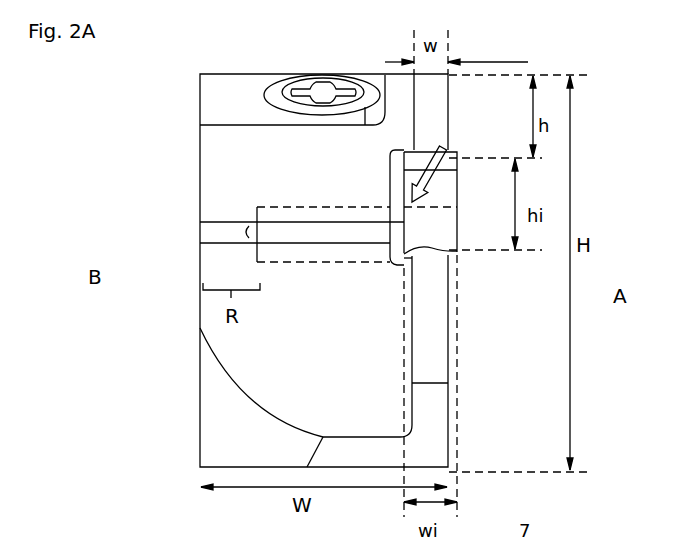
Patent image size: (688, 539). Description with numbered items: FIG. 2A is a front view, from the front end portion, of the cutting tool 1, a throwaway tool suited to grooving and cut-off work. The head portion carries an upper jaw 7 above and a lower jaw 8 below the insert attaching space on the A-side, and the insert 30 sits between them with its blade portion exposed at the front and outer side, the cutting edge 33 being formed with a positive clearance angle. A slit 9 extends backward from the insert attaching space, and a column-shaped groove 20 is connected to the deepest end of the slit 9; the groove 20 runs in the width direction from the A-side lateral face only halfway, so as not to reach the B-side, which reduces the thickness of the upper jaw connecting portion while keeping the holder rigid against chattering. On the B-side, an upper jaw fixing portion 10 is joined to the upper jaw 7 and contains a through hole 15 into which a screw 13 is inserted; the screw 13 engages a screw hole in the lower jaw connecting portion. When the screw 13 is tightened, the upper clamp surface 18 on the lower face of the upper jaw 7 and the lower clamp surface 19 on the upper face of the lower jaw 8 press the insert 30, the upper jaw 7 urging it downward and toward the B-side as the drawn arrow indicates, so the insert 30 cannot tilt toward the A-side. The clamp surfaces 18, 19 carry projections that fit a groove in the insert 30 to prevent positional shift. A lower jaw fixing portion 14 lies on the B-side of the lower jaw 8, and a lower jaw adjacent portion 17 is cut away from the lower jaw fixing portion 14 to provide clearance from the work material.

The cutting tool 1 is at (176, 94).
The upper jaw 7 is at (438, 103).
The lower jaw 8 is at (428, 330).
The slit 9 is at (215, 232).
The upper jaw fixing portion 10 is at (228, 158).
The screw 13 is at (301, 87).
The lower jaw fixing portion 14 is at (233, 428).
The through hole 15 is at (266, 78).
The lower jaw adjacent portion 17 is at (234, 362).
The upper clamp surface 18 is at (438, 152).
The lower clamp surface 19 is at (434, 256).
The column-shaped groove 20 is at (257, 210).
The insert 30 is at (447, 217).
The cutting edge 33 is at (440, 158).